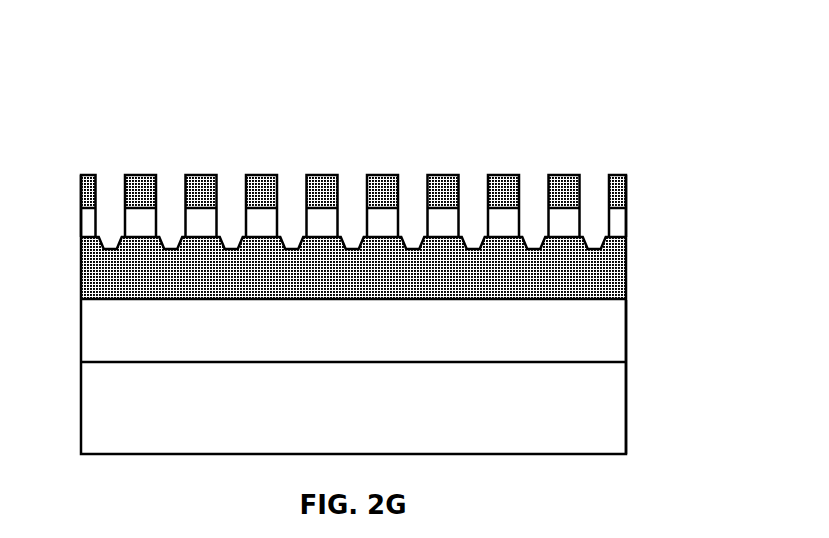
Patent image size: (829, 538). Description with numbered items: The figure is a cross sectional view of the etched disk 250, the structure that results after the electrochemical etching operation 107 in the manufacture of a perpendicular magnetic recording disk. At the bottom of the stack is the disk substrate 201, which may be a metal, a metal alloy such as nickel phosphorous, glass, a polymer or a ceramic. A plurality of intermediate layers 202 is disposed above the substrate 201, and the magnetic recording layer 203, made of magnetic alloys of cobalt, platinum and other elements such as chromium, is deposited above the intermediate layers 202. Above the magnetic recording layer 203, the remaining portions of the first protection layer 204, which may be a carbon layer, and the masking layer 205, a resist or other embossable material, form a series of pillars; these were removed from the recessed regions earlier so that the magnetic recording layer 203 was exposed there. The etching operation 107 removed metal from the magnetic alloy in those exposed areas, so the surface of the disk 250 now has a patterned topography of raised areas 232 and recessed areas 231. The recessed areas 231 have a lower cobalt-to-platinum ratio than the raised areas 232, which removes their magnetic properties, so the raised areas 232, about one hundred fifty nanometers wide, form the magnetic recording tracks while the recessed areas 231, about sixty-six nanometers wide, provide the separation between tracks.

The etching operation 107 is at (645, 392).
The disk substrate 201 is at (417, 419).
The intermediate layers 202 is at (463, 341).
The magnetic recording layer 203 is at (443, 278).
The first protection layer 204 is at (617, 220).
The masking layer 205 is at (625, 187).
The recessed areas 231 is at (293, 216).
The raised areas 232 is at (385, 161).
The etched disk 250 is at (70, 454).